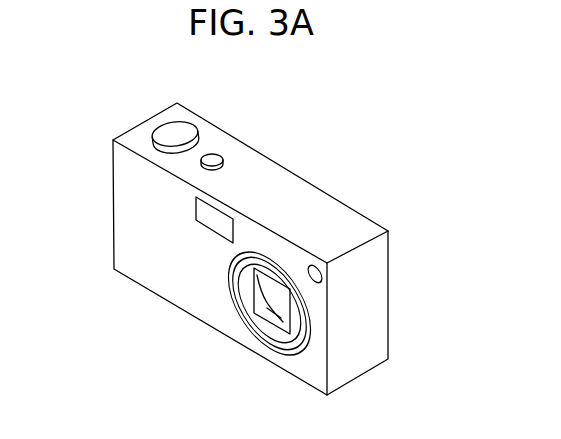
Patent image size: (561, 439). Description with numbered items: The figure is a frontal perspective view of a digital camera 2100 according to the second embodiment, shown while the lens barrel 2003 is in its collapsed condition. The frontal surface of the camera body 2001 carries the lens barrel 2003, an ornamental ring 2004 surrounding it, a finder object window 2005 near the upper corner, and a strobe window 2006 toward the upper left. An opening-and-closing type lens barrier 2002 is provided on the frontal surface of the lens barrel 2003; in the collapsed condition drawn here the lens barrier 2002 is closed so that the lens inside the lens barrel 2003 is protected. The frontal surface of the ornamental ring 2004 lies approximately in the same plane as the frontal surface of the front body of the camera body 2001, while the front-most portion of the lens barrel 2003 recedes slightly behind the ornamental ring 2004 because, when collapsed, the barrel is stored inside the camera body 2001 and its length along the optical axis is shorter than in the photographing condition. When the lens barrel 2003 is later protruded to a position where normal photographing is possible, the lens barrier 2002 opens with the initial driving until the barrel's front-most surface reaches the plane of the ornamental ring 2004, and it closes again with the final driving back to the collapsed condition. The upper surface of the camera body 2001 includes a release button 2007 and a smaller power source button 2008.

The digital camera 2100 is at (110, 123).
The camera body 2001 is at (363, 227).
The lens barrier 2002 is at (279, 314).
The lens barrel 2003 is at (243, 281).
The ornamental ring 2004 is at (253, 331).
The finder object window 2005 is at (322, 275).
The strobe window 2006 is at (230, 212).
The release button 2007 is at (179, 132).
The power source button 2008 is at (216, 155).